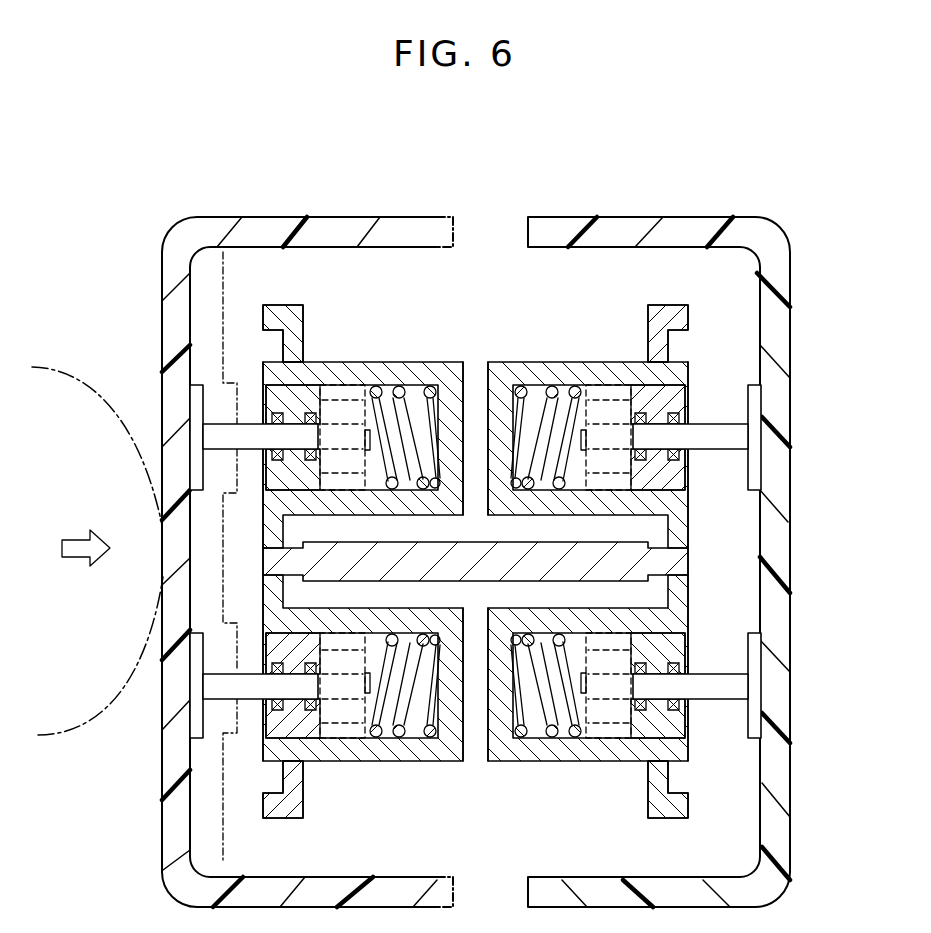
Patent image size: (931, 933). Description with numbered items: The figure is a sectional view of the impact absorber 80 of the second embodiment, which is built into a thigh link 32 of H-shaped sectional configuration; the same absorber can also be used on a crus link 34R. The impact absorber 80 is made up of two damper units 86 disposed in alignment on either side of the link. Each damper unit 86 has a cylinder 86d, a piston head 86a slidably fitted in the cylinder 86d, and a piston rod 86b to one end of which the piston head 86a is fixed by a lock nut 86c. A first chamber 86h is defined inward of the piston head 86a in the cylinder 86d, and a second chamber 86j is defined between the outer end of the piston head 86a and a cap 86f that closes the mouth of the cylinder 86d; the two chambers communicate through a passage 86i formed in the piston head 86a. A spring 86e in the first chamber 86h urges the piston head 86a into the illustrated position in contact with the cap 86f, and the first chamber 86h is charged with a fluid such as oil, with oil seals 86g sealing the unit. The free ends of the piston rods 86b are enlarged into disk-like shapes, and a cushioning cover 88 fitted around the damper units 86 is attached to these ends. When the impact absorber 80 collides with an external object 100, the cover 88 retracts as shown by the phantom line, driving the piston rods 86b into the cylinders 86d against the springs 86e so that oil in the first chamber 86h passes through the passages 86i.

The impact absorber 80 is at (728, 217).
The cushioning cover 88 is at (537, 232).
The thigh link 32 is at (668, 305).
The crus link 34R is at (475, 490).
The damper unit 86 is at (473, 511).
The piston head 86a is at (372, 380).
The piston rod 86b is at (227, 678).
The lock nut 86c is at (425, 482).
The cylinder 86d is at (265, 337).
The spring 86e is at (466, 378).
The cap 86f is at (265, 480).
The oil seal 86g is at (310, 403).
The first chamber 86h is at (420, 385).
The passage 86i is at (362, 395).
The second chamber 86j is at (350, 395).
The external object 100 is at (93, 390).